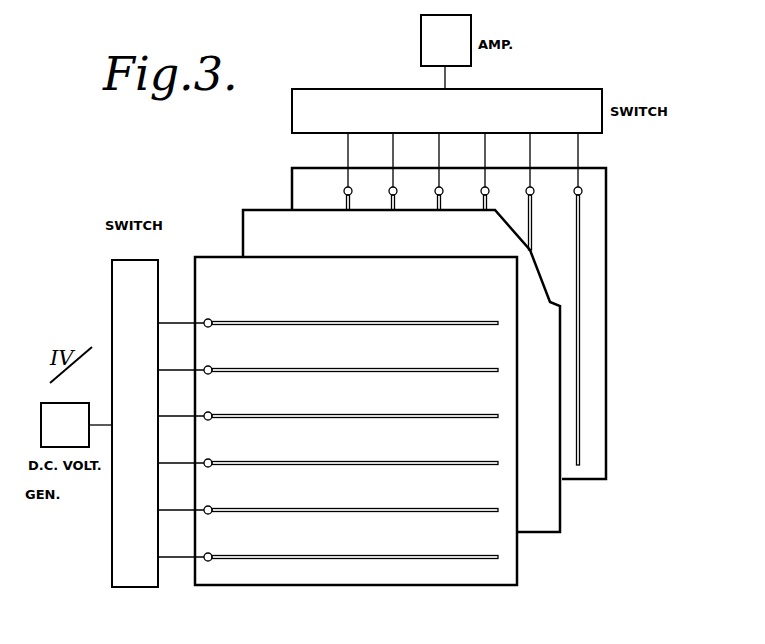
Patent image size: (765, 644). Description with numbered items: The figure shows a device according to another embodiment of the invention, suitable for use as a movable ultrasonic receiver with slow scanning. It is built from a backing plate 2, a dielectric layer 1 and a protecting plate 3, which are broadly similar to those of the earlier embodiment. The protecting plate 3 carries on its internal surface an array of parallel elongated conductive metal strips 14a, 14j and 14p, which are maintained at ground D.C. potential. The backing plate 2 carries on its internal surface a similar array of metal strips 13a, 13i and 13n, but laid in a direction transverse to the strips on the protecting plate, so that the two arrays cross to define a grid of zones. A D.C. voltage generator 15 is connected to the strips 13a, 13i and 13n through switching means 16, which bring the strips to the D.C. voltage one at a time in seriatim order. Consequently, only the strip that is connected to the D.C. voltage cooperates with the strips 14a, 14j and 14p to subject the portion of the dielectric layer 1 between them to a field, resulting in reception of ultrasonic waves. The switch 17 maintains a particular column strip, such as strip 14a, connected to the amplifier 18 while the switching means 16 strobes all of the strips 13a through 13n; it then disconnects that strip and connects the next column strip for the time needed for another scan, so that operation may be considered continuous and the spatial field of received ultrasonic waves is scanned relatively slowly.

The dielectric layer 1 is at (545, 513).
The backing plate 2 is at (503, 566).
The protecting plate 3 is at (595, 465).
The strip 13a is at (225, 321).
The strip 13i is at (222, 468).
The strip 13n is at (243, 560).
The conductive metal strip 14a is at (347, 204).
The conductive metal strip 14j is at (487, 185).
The conductive metal strip 14p is at (581, 198).
The D.C. voltage generator 15 is at (76, 438).
The switching means 16 is at (146, 436).
The switch 17 is at (457, 120).
The amplifier 18 is at (458, 53).